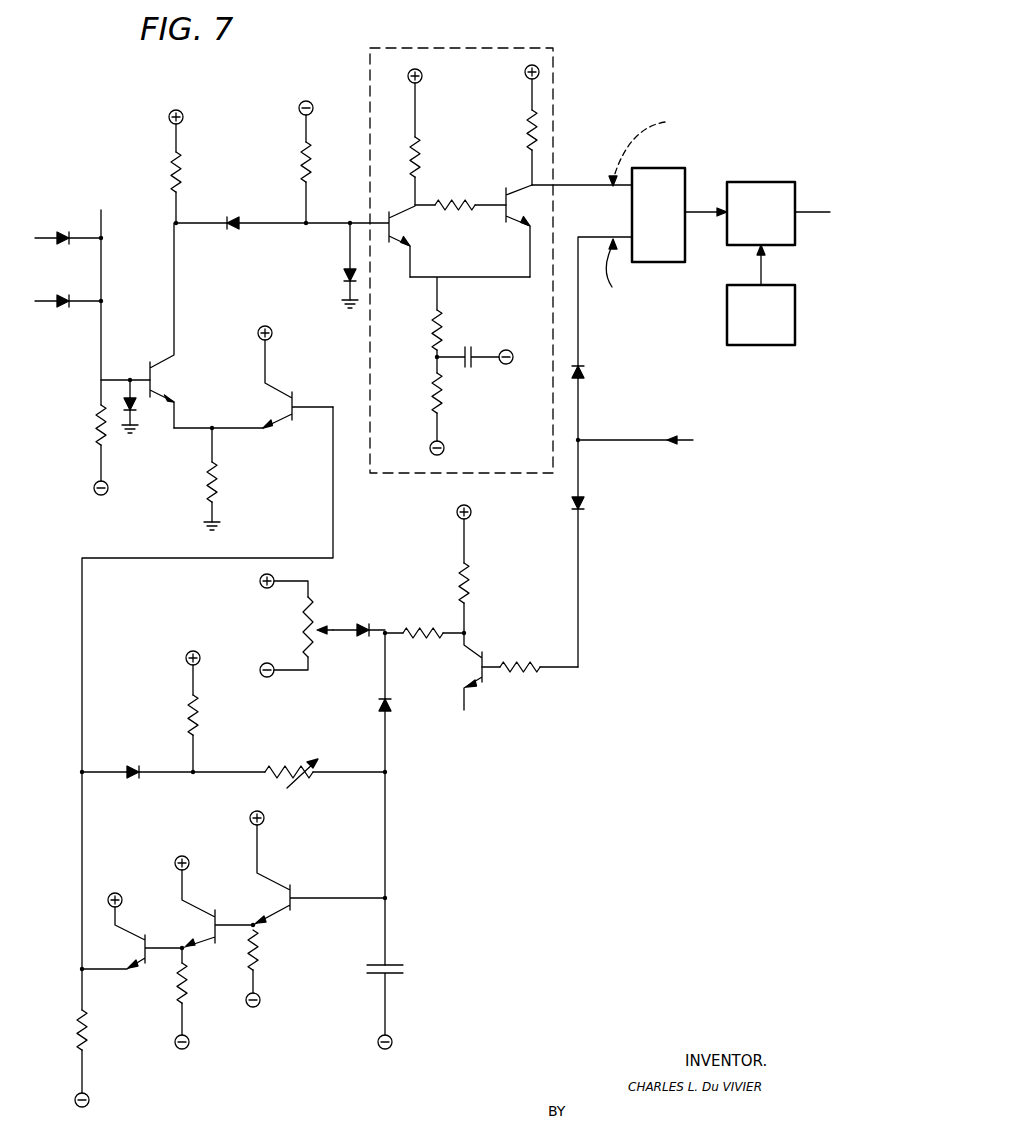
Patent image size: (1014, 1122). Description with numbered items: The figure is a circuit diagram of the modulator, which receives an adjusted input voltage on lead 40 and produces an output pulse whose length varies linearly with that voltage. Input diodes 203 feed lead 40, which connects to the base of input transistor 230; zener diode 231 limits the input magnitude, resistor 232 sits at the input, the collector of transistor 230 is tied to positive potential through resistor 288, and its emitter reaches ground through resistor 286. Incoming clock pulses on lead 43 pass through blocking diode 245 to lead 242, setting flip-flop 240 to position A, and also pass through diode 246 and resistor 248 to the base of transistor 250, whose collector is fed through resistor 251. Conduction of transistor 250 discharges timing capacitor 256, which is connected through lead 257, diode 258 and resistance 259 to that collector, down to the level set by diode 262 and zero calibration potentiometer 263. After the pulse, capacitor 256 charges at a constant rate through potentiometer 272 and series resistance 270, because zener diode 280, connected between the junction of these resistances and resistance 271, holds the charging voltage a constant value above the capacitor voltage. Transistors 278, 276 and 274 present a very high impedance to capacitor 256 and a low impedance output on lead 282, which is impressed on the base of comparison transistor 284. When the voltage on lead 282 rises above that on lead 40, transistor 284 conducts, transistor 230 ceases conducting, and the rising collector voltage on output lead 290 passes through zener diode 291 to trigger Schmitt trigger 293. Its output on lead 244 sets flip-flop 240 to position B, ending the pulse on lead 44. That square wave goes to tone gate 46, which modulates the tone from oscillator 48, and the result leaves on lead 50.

The input diodes 203 is at (66, 231).
The lead 40 is at (101, 350).
The resistor 232 is at (100, 430).
The zener diode 231 is at (140, 410).
The input transistor 230 is at (160, 375).
The resistor 288 is at (178, 165).
The output lead 290 is at (205, 226).
The zener diode 291 is at (236, 216).
The resistor 286 is at (216, 484).
The comparison transistor 284 is at (276, 426).
The lead 282 is at (82, 645).
The Schmitt trigger 293 is at (556, 82).
The lead 244 is at (575, 185).
The flip-flop circuit 240 is at (672, 170).
The lead 44 is at (718, 214).
The tone gate 46 is at (772, 182).
The lead 50 is at (814, 214).
The oscillator 48 is at (778, 346).
The lead 242 is at (578, 342).
The blocking diode 245 is at (583, 374).
The diode 246 is at (585, 502).
The lead 43 is at (644, 440).
The resistor 248 is at (535, 672).
The resistor 251 is at (470, 580).
The transistor 250 is at (486, 658).
The resistance 259 is at (426, 628).
The diode 258 is at (389, 700).
The potentiometer 263 is at (306, 622).
The diode 262 is at (362, 641).
The zener diode 280 is at (135, 783).
The series resistance 270 is at (190, 712).
The potentiometer 272 is at (292, 770).
The lead 257 is at (388, 838).
The timing capacitor 256 is at (392, 976).
The transistor 278 is at (276, 883).
The transistor 276 is at (196, 900).
The transistor 274 is at (130, 928).
The resistance 271 is at (85, 1026).